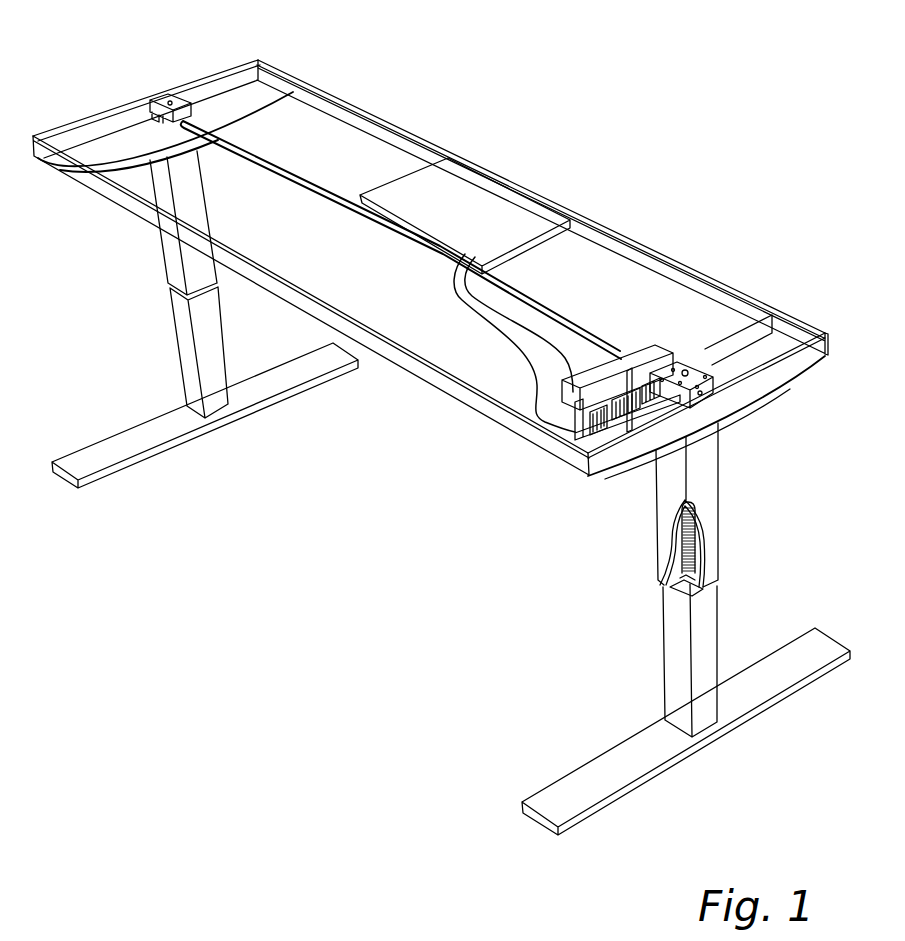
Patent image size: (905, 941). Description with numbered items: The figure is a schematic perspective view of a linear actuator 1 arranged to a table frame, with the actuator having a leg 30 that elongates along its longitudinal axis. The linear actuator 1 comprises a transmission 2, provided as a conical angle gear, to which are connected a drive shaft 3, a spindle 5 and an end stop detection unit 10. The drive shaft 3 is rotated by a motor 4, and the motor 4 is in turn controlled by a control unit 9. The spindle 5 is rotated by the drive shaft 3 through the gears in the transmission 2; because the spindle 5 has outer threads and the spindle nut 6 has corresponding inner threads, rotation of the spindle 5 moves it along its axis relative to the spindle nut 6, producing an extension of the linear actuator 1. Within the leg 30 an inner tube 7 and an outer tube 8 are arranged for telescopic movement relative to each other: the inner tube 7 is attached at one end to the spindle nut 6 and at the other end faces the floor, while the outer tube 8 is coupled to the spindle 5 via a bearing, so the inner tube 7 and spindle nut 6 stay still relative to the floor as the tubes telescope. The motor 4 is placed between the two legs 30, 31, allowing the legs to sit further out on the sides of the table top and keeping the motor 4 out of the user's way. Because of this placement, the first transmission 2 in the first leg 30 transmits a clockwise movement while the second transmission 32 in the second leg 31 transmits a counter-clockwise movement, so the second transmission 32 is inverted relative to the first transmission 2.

The linear actuator 1 is at (590, 568).
The transmission 2 is at (695, 372).
The drive shaft 3 is at (565, 315).
The motor 4 is at (588, 375).
The spindle 5 is at (695, 545).
The spindle nut 6 is at (670, 588).
The inner tube 7 is at (718, 627).
The outer tube 8 is at (703, 502).
The control unit 9 is at (517, 210).
The end stop detection unit 10 is at (577, 420).
The leg 30 is at (762, 447).
The leg 31 is at (143, 275).
The second transmission 32 is at (156, 100).